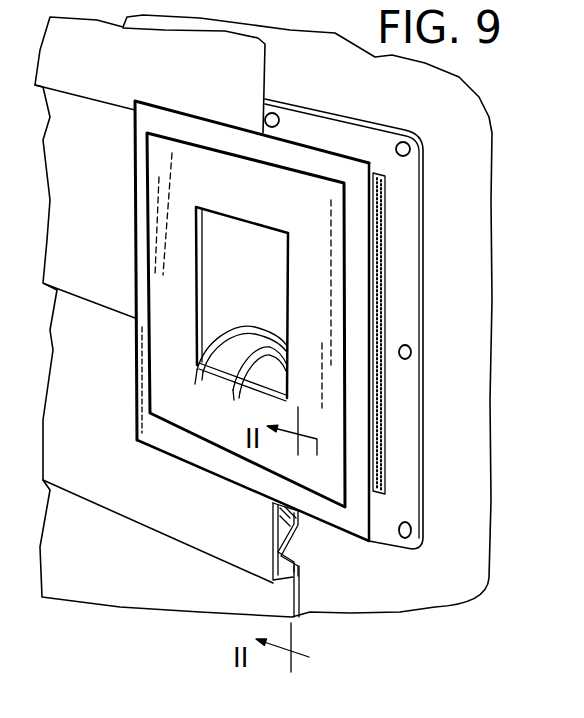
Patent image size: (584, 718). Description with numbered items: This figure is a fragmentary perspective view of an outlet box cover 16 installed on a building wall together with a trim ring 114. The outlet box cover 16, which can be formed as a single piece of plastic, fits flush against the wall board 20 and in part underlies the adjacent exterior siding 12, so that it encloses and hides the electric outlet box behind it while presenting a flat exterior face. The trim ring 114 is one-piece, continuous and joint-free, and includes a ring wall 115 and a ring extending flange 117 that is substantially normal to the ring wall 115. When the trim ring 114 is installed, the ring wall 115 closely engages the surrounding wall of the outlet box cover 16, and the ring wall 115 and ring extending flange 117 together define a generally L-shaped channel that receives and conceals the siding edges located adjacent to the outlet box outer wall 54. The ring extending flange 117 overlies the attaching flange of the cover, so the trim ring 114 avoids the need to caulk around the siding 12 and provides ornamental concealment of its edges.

The exterior siding 12 is at (128, 582).
The outlet box cover 16 is at (330, 229).
The wall board 20 is at (462, 349).
The outlet box outer wall 54 is at (325, 338).
The trim ring 114 is at (418, 273).
The ring wall 115 is at (385, 423).
The ring extending flange 117 is at (360, 503).